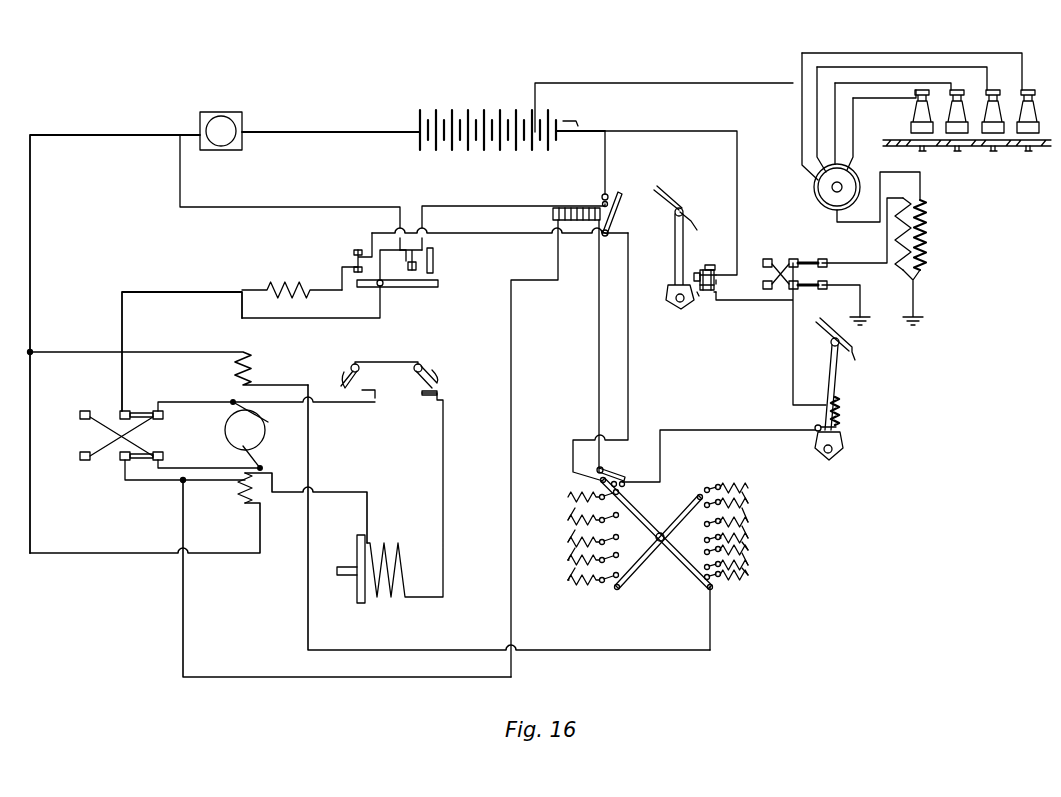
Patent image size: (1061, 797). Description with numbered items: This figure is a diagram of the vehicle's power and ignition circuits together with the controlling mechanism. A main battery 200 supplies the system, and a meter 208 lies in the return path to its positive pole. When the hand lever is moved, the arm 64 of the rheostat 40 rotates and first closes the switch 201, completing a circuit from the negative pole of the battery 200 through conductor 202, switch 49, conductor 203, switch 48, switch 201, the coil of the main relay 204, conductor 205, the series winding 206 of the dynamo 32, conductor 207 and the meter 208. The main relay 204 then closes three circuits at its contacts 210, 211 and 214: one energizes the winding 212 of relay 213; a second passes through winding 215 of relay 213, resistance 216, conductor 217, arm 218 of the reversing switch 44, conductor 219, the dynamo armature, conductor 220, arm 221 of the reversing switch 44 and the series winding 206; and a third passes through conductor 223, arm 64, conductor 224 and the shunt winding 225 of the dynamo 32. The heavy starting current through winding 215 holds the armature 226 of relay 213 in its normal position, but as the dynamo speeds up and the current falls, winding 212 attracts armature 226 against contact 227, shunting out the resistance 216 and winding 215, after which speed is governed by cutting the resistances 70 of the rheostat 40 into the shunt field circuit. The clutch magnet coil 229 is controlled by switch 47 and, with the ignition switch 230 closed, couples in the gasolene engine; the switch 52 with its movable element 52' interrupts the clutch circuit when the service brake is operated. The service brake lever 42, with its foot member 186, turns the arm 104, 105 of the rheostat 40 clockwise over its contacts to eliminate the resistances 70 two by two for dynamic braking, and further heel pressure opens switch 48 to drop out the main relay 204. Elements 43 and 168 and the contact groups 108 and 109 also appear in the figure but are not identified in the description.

The main battery 200 is at (480, 116).
The switch 201 is at (618, 478).
The conductor 202 is at (738, 196).
The conductor 203 is at (793, 362).
The main relay 204 is at (578, 222).
The conductor 205 is at (246, 676).
The series winding 206 is at (240, 502).
The conductor 207 is at (31, 264).
The meter 208 is at (243, 122).
The contact of relay 210 is at (616, 196).
The contact of relay 211 is at (602, 196).
The winding of relay 212 is at (412, 246).
The relay 213 is at (396, 292).
The contact of relay 214 is at (616, 214).
The winding of relay 215 is at (355, 256).
The resistance 216 is at (293, 285).
The conductor 217 is at (126, 306).
The arm of reversing switch 218 is at (138, 410).
The conductor 219 is at (179, 404).
The conductor 220 is at (172, 468).
The arm of reversing switch 221 is at (132, 482).
The conductor 223 is at (630, 328).
The conductor 224 is at (580, 650).
The shunt winding 225 is at (253, 362).
The armature of relay 226 is at (438, 286).
The contact 227 is at (434, 266).
The clutch magnet coil 229 is at (396, 572).
The ignition switch 230 is at (814, 262).
The dynamo 32 is at (264, 431).
The rheostat 40 is at (681, 615).
The service brake lever 42 is at (833, 378).
The lever 43 is at (685, 249).
The reversing switch 44 is at (100, 438).
The switch 47 is at (424, 391).
The switch 48 is at (845, 428).
The switch 49 is at (709, 292).
The switch 52 is at (368, 381).
The movable element of switch 52' is at (373, 363).
The arm of rheostat 64 is at (640, 514).
The resistances 70 is at (568, 520).
The arm of rheostat 104 is at (668, 538).
The arm of rheostat 105 is at (636, 561).
The contacts 108 is at (736, 550).
The contacts 109 is at (616, 583).
The arm 168 is at (683, 206).
The foot member 186 is at (862, 322).